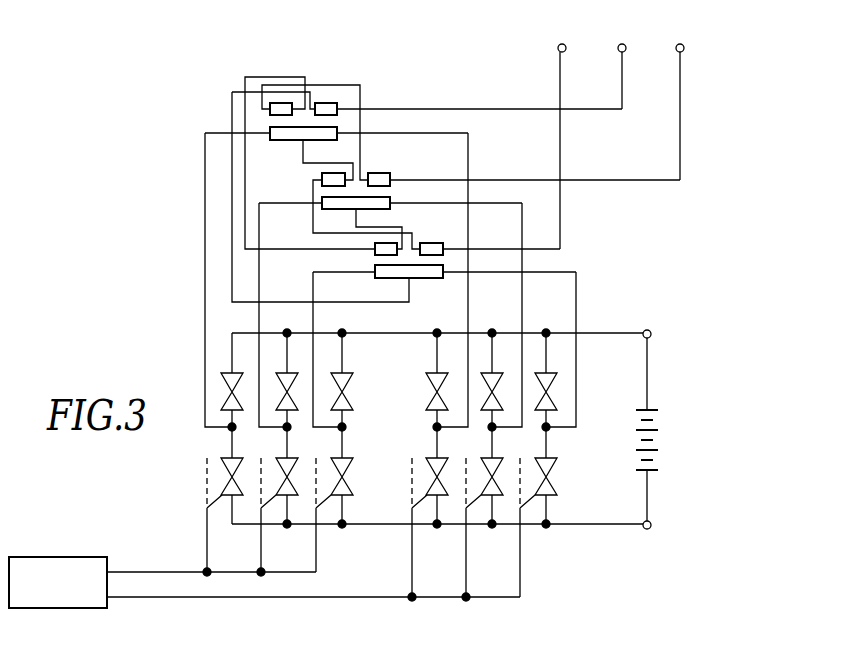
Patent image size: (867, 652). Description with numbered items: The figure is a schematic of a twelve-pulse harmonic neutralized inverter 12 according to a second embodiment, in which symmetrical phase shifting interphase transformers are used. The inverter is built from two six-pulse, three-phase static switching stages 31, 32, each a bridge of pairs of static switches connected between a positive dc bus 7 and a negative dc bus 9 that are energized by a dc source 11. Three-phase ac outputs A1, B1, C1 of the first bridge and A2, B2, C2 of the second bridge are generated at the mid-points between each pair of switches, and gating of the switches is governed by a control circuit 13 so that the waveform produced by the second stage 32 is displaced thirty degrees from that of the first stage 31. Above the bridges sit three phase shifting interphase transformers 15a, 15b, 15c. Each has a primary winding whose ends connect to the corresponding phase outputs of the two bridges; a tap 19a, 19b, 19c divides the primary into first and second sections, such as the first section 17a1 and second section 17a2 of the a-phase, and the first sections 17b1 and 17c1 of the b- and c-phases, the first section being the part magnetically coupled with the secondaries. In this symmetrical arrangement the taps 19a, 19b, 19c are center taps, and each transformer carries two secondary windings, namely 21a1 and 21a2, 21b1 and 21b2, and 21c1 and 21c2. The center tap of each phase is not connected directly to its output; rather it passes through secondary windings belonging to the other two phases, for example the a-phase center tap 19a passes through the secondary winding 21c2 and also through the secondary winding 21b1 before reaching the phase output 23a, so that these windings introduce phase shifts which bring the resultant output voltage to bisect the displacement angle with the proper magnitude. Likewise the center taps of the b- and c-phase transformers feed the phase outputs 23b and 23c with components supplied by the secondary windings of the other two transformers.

The phase shifting interphase transformer 15a is at (268, 70).
The phase shifting interphase transformer 15b is at (400, 194).
The phase shifting interphase transformer 15c is at (437, 286).
The first section of primary winding 17a1 is at (270, 131).
The second section of primary winding 17a2 is at (347, 127).
The first section of primary winding 17b1 is at (356, 203).
The first section of primary winding 17c1 is at (409, 271).
The secondary winding 21a1 is at (281, 103).
The secondary winding 21a2 is at (327, 100).
The secondary winding 21b1 is at (320, 181).
The secondary winding 21b2 is at (381, 173).
The secondary winding 21c1 is at (377, 253).
The secondary winding 21c2 is at (444, 245).
The tap 19a is at (302, 155).
The tap 19b is at (402, 228).
The tap 19c is at (228, 304).
The phase output 23a is at (557, 49).
The phase output 23b is at (625, 52).
The phase output 23c is at (683, 52).
The inverter 12 is at (672, 223).
The positive dc bus 7 is at (603, 333).
The negative dc bus 9 is at (593, 525).
The dc source 11 is at (659, 440).
The control circuit 13 is at (62, 557).
The six-pulse three-phase static switching stage 31 is at (245, 533).
The six-pulse three-phase static switching stage 32 is at (547, 528).
The three-phase ac output A1 is at (214, 454).
The three-phase ac output B1 is at (275, 454).
The three-phase ac output C1 is at (343, 452).
The three-phase ac output A2 is at (427, 467).
The three-phase ac output B2 is at (481, 467).
The three-phase ac output C2 is at (556, 465).